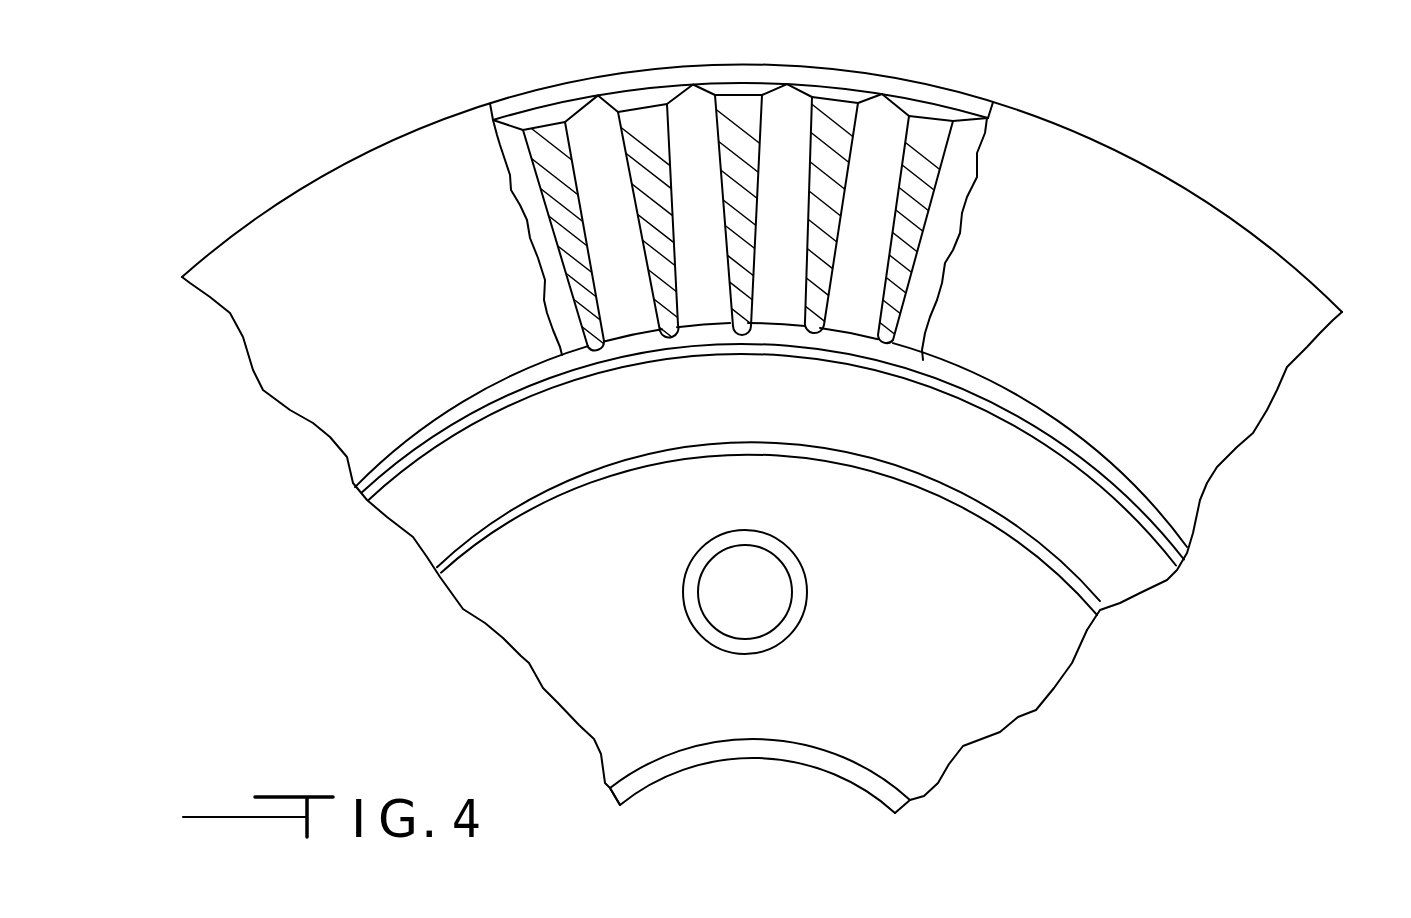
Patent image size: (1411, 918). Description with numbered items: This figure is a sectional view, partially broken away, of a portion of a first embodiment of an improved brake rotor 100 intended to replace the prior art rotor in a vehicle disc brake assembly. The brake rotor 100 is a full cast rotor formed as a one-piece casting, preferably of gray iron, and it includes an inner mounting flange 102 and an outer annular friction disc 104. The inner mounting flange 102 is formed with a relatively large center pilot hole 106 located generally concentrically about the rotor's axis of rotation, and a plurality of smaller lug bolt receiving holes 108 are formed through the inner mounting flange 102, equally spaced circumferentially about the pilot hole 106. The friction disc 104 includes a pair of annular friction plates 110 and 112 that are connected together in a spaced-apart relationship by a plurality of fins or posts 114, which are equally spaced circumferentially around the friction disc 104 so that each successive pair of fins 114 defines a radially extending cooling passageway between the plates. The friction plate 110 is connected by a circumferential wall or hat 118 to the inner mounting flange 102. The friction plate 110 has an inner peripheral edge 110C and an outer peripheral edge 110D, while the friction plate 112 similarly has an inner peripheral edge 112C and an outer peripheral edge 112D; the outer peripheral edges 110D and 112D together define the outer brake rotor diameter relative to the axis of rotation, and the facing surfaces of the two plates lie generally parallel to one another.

The brake rotor 100 is at (1272, 173).
The inner mounting flange 102 is at (1030, 725).
The outer annular friction disc 104 is at (1255, 438).
The center pilot hole 106 is at (641, 790).
The lug bolt receiving holes 108 is at (742, 636).
The friction plate 110 is at (1273, 275).
The inner peripheral edge 110C is at (1095, 130).
The outer peripheral edge 110D is at (990, 527).
The friction plate 112 is at (885, 105).
The inner peripheral edge 112C is at (745, 63).
The outer peripheral edge 112D is at (951, 392).
The fins or posts 114 is at (915, 242).
The circumferential wall or hat 118 is at (1138, 570).